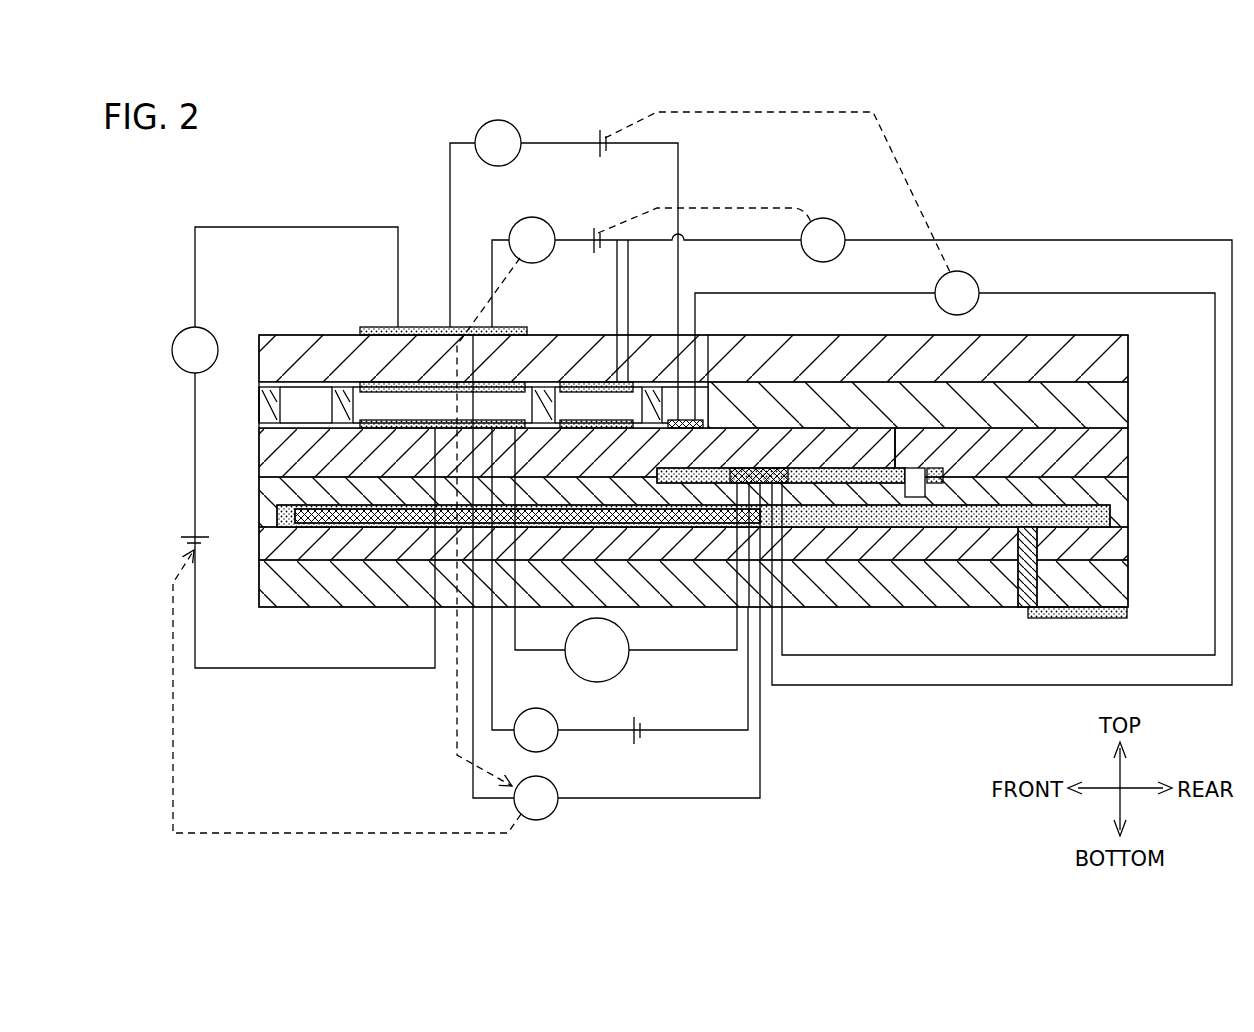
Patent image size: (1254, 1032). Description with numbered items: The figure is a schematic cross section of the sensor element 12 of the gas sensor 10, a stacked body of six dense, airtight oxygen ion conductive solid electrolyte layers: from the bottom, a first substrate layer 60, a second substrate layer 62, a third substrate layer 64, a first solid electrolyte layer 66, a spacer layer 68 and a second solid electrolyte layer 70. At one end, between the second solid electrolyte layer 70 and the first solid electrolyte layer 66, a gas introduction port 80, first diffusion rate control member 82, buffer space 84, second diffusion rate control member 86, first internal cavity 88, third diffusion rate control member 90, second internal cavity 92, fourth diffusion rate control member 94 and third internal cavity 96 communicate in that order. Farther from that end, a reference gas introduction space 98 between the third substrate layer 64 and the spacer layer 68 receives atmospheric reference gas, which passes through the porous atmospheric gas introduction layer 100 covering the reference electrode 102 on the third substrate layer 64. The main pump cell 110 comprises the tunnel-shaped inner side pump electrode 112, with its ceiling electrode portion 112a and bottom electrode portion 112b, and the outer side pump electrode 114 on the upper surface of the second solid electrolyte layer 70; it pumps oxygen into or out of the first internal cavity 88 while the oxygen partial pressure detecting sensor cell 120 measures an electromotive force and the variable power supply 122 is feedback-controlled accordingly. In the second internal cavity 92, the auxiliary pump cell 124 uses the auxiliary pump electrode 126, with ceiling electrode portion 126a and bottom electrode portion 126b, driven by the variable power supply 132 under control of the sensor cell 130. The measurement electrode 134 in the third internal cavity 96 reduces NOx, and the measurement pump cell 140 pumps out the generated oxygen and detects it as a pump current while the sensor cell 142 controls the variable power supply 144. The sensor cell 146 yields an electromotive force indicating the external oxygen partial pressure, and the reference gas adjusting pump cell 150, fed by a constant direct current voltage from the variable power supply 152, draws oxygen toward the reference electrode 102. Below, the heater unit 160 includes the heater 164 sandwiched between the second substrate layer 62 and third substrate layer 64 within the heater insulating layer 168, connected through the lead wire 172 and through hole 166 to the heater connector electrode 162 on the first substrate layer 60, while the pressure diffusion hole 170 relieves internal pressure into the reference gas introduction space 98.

The gas sensor 10 is at (1073, 181).
The sensor element 12 is at (687, 431).
The first substrate layer 60 is at (1108, 587).
The second substrate layer 62 is at (1108, 545).
The third substrate layer 64 is at (270, 500).
The first solid electrolyte layer 66 is at (268, 460).
The spacer layer 68 is at (1108, 404).
The second solid electrolyte layer 70 is at (1108, 360).
The gas introduction port 80 is at (259, 416).
The first diffusion rate control member 82 is at (268, 385).
The buffer space 84 is at (296, 385).
The second diffusion rate control member 86 is at (335, 390).
The first internal cavity 88 is at (472, 345).
The third diffusion rate control member 90 is at (540, 372).
The second internal cavity 92 is at (575, 385).
The fourth diffusion rate control member 94 is at (660, 390).
The third internal cavity 96 is at (712, 398).
The reference gas introduction space 98 is at (1108, 452).
The atmospheric gas introduction layer 100 is at (916, 474).
The reference electrode 102 is at (780, 480).
The main pump cell 110 is at (268, 425).
The inner side pump electrode 112 is at (418, 379).
The ceiling electrode portion 112a is at (452, 393).
The bottom electrode portion 112b is at (380, 430).
The outer side pump electrode 114 is at (382, 327).
The oxygen partial pressure detecting sensor cell for controlling the main pump 120 is at (567, 812).
The variable power supply 122 is at (181, 538).
The auxiliary pump cell 124 is at (630, 280).
The auxiliary pump electrode 126 is at (599, 376).
The ceiling electrode portion 126a is at (598, 380).
The bottom electrode portion 126b is at (604, 430).
The oxygen partial pressure detecting sensor cell for controlling the auxiliary pump 130 is at (1077, 240).
The variable power supply 132 is at (598, 235).
The measurement electrode 134 is at (682, 430).
The measurement pump cell 140 is at (534, 255).
The oxygen partial pressure detecting sensor cell for controlling the measurement pu 142 is at (1077, 294).
The variable power supply 144 is at (602, 136).
The sensor cell 146 is at (553, 656).
The reference gas adjusting pump cell 150 is at (620, 609).
The variable power supply 152 is at (632, 740).
The heater unit 160 is at (734, 565).
The heater connector electrode 162 is at (1128, 612).
The heater 164 is at (362, 528).
The through hole 166 is at (1020, 577).
The heater insulating layer 168 is at (286, 528).
The pressure diffusion hole 170 is at (946, 490).
The lead wire 172 is at (838, 518).